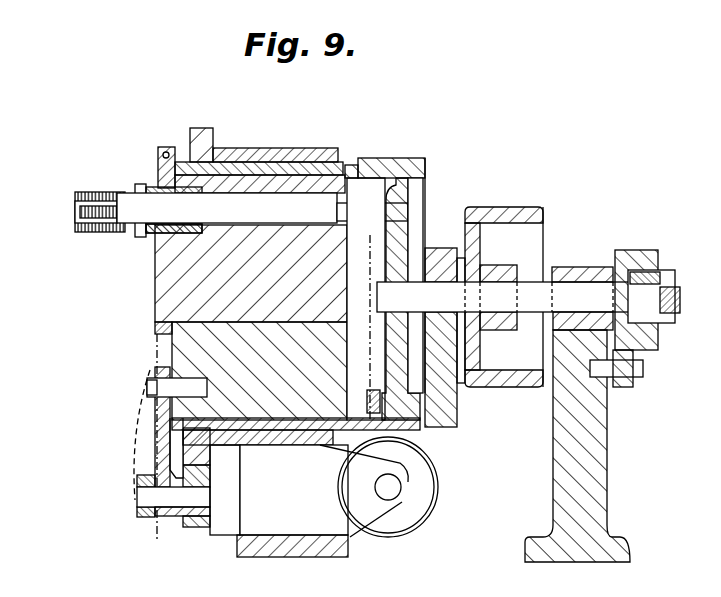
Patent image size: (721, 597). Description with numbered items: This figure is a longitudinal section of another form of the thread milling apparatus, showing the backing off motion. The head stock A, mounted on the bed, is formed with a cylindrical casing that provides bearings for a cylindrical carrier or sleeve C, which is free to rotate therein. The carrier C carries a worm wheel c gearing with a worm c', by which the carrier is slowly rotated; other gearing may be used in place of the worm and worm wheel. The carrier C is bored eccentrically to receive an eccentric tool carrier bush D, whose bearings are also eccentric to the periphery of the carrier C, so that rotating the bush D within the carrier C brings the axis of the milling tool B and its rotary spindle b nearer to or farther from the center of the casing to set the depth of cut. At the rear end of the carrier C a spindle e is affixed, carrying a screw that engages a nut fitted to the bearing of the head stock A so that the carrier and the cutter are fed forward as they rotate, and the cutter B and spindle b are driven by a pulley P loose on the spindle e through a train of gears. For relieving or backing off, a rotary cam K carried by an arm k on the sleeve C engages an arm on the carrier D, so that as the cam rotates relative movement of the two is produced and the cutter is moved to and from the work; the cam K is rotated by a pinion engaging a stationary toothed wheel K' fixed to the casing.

The stationary toothed wheel K' is at (196, 287).
The milling tool B is at (73, 212).
The rotary spindle b is at (262, 210).
The eccentric tool carrier bush D is at (243, 286).
The cylindrical carrier or sleeve C is at (356, 140).
The worm wheel c is at (385, 278).
The pulley P is at (484, 317).
The spindle e is at (518, 297).
The head stock A is at (577, 446).
The arm k is at (137, 454).
The rotary cam K is at (269, 475).
The worm c' is at (350, 497).